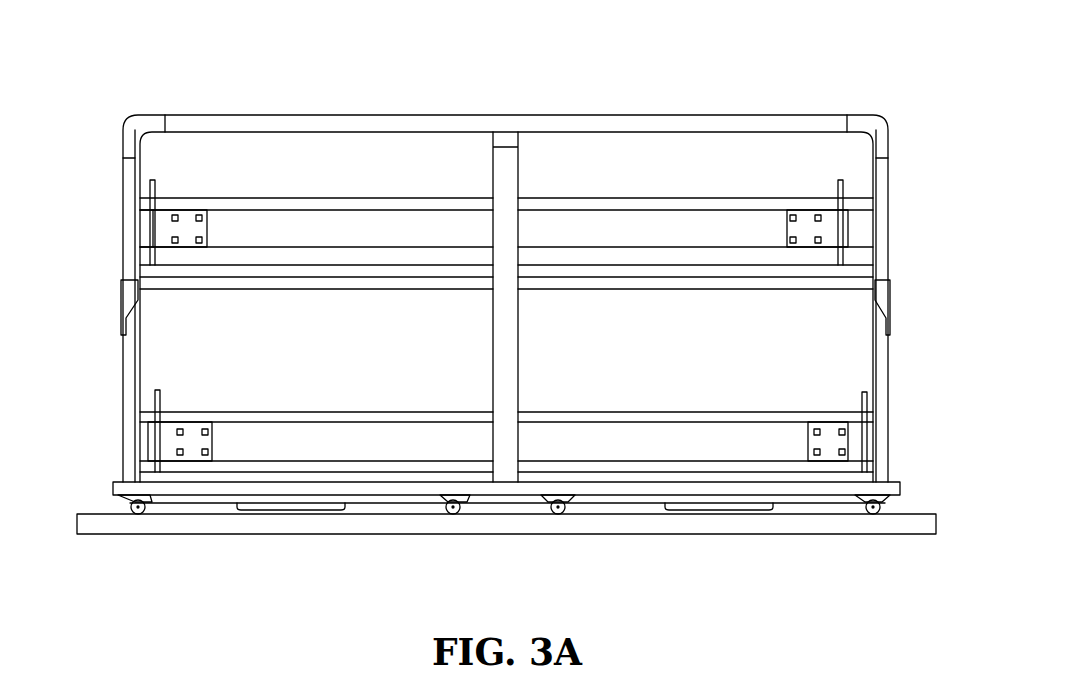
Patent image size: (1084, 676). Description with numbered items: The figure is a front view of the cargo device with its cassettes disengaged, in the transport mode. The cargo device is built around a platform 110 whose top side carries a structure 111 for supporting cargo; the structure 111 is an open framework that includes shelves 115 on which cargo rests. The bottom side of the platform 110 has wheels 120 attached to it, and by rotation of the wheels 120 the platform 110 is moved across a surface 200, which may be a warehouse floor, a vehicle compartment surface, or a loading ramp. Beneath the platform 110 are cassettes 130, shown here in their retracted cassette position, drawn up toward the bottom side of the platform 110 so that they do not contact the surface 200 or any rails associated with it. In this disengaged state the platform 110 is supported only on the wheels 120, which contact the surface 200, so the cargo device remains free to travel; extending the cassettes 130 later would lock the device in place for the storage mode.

The structure 111 is at (653, 156).
The shelves 115 is at (128, 254).
The platform 110 is at (215, 490).
The wheels 120 is at (135, 513).
The cassettes 130 is at (285, 507).
The surface 200 is at (340, 523).